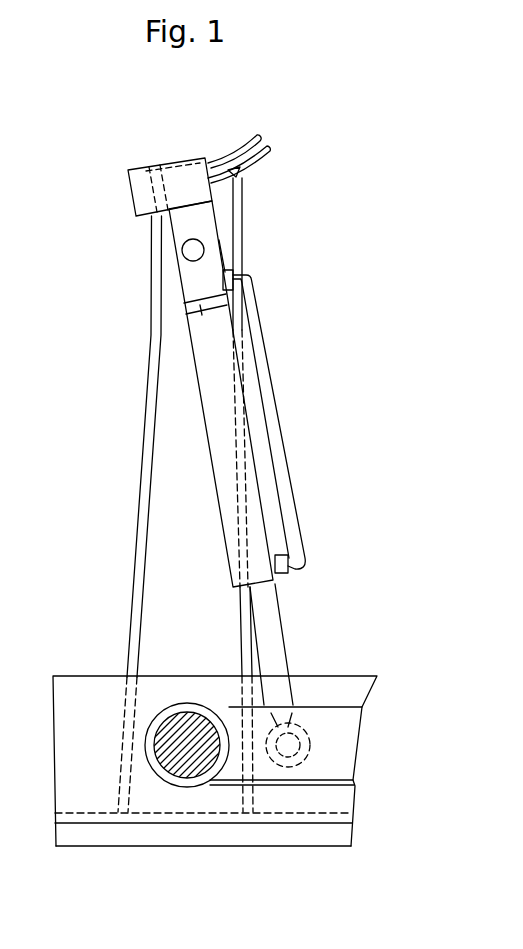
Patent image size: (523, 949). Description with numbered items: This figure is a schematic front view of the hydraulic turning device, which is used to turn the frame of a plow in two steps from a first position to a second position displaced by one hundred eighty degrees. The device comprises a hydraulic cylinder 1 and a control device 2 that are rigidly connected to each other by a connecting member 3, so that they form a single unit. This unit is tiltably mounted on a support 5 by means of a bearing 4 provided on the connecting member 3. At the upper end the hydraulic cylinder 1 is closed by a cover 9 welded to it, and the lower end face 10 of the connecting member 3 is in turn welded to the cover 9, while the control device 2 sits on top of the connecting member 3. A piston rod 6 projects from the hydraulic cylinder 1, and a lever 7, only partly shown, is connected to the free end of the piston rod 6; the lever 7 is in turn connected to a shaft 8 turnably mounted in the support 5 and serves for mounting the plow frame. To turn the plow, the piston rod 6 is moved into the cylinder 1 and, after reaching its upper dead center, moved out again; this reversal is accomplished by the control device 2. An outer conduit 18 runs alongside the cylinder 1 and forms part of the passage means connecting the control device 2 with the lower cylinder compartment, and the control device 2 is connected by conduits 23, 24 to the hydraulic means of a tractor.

The hydraulic cylinder 1 is at (220, 435).
The control device 2 is at (167, 181).
The connecting member 3 is at (211, 263).
The bearing 4 is at (200, 241).
The support 5 is at (172, 520).
The piston rod 6 is at (272, 633).
The lever 7 is at (335, 765).
The shaft 8 is at (197, 757).
The cover 9 is at (204, 312).
The lower end face 10 is at (234, 272).
The outer conduit 18 is at (280, 455).
The conduit 23 is at (240, 151).
The conduit 24 is at (256, 166).